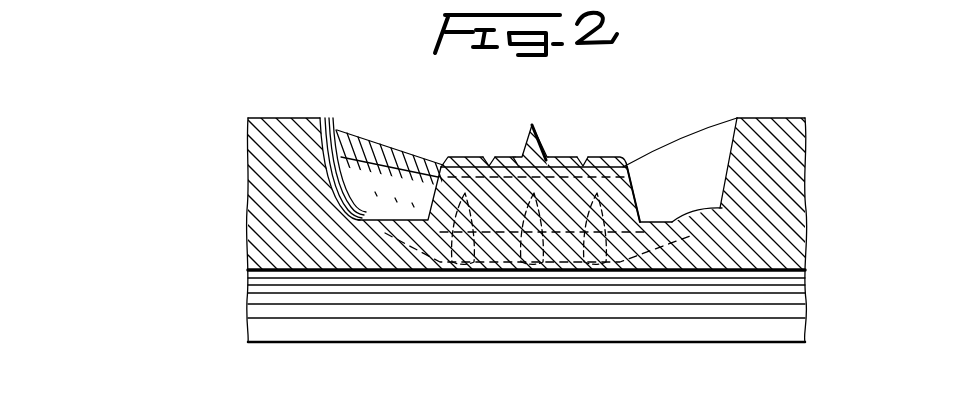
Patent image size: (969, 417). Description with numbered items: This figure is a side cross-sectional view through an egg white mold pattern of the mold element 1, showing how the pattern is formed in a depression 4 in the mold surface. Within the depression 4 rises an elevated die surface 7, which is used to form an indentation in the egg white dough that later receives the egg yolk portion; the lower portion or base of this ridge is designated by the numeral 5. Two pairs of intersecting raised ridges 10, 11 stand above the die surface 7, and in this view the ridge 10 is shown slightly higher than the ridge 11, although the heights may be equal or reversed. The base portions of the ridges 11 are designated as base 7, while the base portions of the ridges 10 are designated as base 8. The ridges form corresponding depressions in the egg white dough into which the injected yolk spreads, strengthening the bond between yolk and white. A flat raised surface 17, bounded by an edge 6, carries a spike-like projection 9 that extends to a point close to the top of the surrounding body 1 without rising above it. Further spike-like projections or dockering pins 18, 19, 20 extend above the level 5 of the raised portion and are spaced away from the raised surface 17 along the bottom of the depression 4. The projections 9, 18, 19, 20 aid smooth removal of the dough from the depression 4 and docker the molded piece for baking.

The mold element 1 is at (768, 140).
The depression 4 is at (332, 135).
The base of ridge 5 is at (420, 198).
The edge 6 is at (442, 166).
The raised die surface 7 is at (519, 164).
The base 8 is at (590, 166).
The projection 9 is at (534, 128).
The raised ridge 10 is at (486, 164).
The raised ridge 11 is at (507, 160).
The raised surface 17 is at (464, 170).
The projection 18 is at (530, 268).
The projection 19 is at (445, 270).
The projection 20 is at (603, 265).